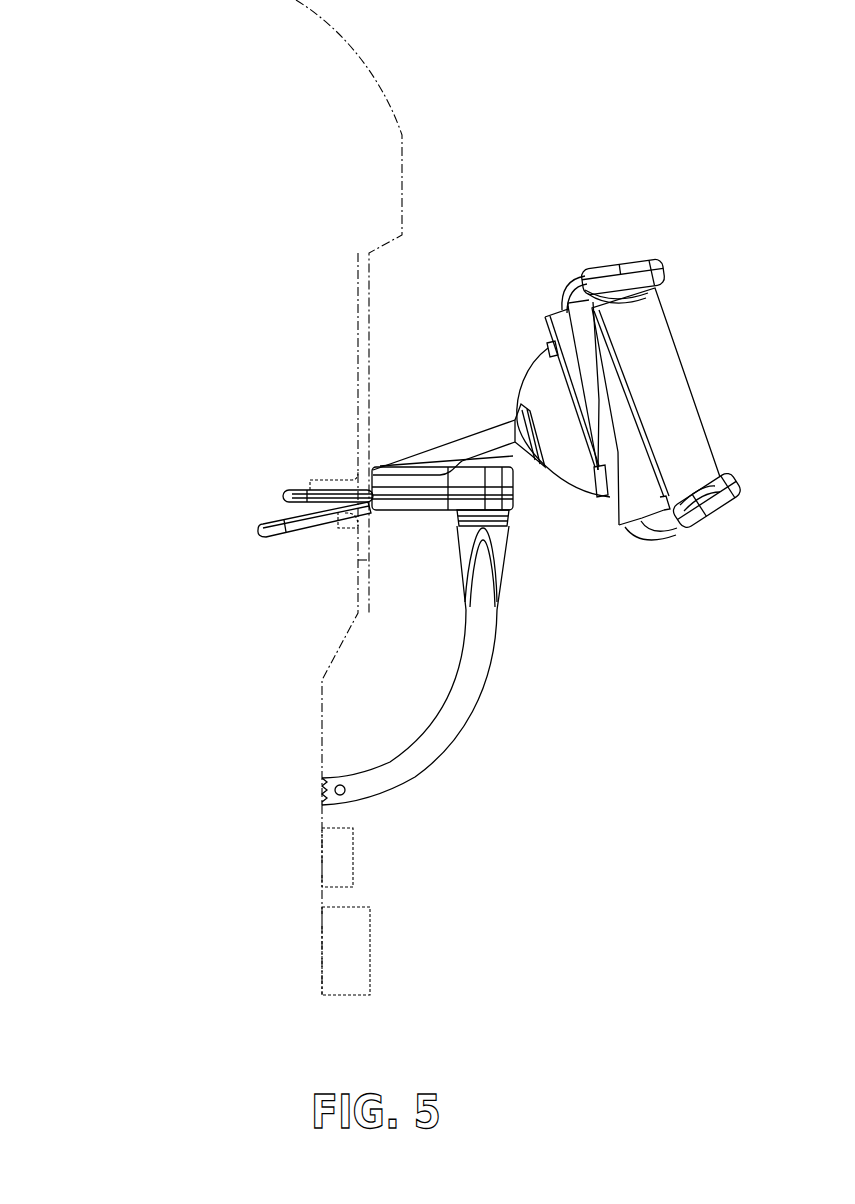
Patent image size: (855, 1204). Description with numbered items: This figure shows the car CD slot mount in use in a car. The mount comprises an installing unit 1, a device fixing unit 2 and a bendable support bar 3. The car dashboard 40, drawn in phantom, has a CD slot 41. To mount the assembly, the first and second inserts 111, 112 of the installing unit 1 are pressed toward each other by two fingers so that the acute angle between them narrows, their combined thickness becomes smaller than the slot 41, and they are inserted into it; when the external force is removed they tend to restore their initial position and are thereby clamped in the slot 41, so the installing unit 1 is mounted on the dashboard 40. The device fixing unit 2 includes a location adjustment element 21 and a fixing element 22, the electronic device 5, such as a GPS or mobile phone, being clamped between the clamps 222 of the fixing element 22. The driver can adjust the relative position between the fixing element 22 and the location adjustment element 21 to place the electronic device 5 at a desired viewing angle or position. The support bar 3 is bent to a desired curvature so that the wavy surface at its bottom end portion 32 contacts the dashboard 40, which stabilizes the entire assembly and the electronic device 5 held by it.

The installing unit 1 is at (514, 488).
The device fixing unit 2 is at (507, 320).
The location adjustment element 21 is at (481, 452).
The fixing element 22 is at (582, 370).
The clamps 222 is at (610, 268).
The bendable support bar 3 is at (477, 667).
The bottom end portion 32 is at (342, 798).
The car dashboard 40 is at (405, 185).
The CD slot 41 is at (357, 490).
The first insert 111 is at (283, 491).
The second insert 112 is at (276, 533).
The electronic device 5 is at (644, 394).